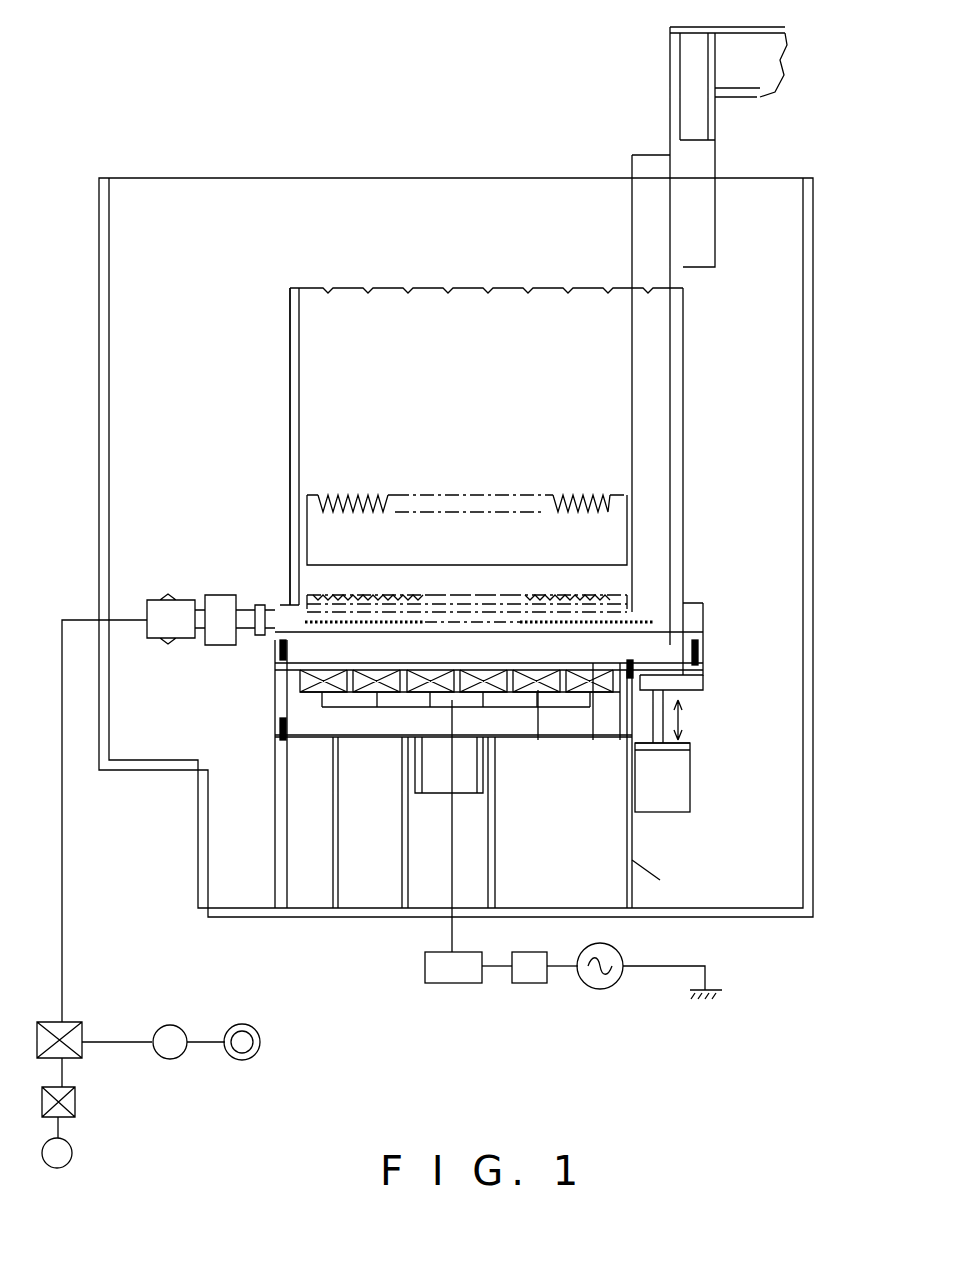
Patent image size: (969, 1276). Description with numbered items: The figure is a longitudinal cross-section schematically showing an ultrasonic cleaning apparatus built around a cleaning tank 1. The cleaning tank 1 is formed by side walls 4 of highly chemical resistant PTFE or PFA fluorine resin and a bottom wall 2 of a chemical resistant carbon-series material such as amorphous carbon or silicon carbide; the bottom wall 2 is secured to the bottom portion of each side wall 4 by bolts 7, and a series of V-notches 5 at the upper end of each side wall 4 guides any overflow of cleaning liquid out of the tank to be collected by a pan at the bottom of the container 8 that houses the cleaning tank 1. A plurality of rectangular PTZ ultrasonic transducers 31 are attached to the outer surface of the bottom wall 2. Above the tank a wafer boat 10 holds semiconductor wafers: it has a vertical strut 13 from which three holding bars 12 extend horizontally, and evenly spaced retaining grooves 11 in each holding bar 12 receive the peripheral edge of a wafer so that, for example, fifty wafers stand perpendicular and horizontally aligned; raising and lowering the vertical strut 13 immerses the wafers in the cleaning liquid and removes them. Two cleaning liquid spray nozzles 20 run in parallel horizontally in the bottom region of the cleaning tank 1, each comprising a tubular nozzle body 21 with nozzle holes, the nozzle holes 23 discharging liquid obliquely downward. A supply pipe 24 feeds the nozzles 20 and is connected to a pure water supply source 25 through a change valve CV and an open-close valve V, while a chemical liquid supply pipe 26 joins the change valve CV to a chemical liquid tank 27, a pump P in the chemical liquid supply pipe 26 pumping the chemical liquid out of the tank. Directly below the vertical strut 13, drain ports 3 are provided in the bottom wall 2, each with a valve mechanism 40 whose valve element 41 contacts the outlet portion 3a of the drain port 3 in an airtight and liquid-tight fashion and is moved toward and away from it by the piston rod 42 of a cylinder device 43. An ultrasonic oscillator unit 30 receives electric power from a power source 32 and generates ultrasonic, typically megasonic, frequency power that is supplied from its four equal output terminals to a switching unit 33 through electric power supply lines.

The cleaning tank 1 is at (279, 318).
The bottom wall 2 is at (595, 665).
The drain ports 3 is at (703, 628).
The outlet portion 3a is at (678, 698).
The side walls 4 is at (288, 347).
The V-notches 5 is at (367, 286).
The bolts 7 is at (273, 640).
The container 8 is at (99, 200).
The wafer boat 10 is at (676, 335).
The retaining grooves 11 is at (333, 494).
The holding bars 12 is at (326, 532).
The vertical strut 13 is at (652, 376).
The cleaning liquid spray nozzles 20 is at (495, 615).
The tubular nozzle body 21 is at (403, 632).
The nozzle holes 23 is at (587, 645).
The supply pipe 24 is at (60, 855).
The pure water supply source 25 is at (62, 1158).
The chemical liquid supply pipe 26 is at (130, 1042).
The chemical liquid tank 27 is at (248, 1030).
The ultrasonic oscillator unit 30 is at (527, 978).
The ultrasonic transducers 31 is at (538, 740).
The power source 32 is at (600, 978).
The switching unit 33 is at (448, 975).
The valve mechanism 40 is at (675, 785).
The valve element 41 is at (662, 718).
The piston rod 42 is at (697, 755).
The cylinder device 43 is at (703, 798).
The change valve CV is at (66, 1022).
The open-close valve V is at (77, 1100).
The pump P is at (170, 1042).